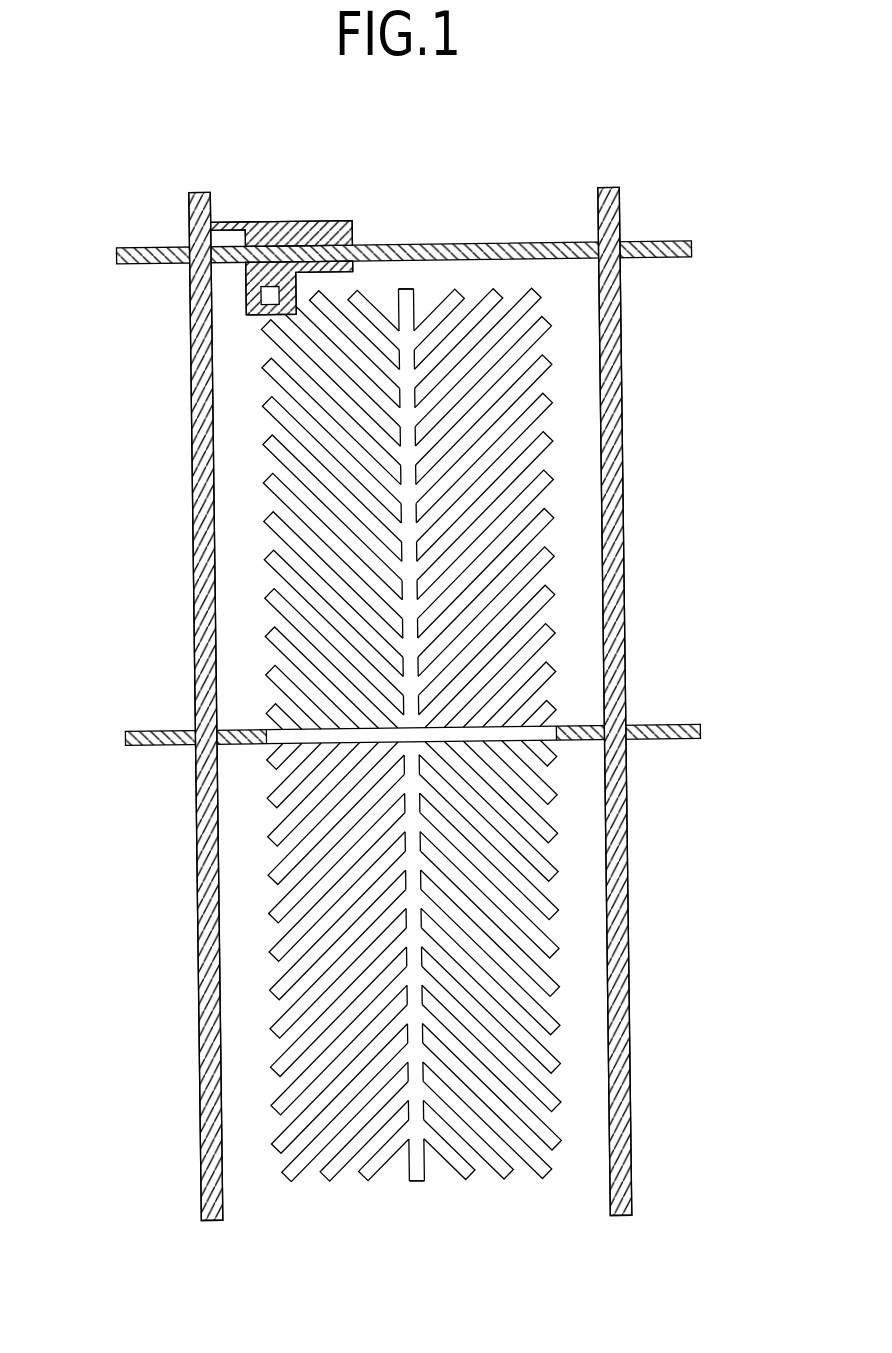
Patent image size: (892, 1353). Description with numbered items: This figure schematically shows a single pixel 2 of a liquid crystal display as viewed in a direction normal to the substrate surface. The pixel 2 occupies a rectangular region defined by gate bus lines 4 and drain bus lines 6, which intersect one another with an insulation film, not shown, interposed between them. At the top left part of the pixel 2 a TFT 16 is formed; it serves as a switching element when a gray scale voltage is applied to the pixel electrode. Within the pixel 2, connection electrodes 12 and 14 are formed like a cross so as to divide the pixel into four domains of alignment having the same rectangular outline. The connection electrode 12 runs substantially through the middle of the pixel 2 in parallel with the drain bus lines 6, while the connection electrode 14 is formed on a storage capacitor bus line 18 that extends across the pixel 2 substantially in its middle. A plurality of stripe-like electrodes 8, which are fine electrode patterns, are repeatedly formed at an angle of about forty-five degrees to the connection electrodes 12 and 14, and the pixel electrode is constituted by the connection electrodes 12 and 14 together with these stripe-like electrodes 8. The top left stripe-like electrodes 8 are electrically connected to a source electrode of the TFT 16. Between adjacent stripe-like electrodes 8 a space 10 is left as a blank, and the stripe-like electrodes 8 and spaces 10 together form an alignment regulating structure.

The pixel 2 is at (138, 449).
The gate bus line 4 is at (672, 241).
The drain bus line 6 is at (223, 1207).
The stripe-like electrode 8 is at (478, 760).
The space 10 is at (553, 993).
The connection electrode 12 is at (414, 961).
The connection electrode 14 is at (258, 748).
The TFT 16 is at (354, 222).
The storage capacitor bus line 18 is at (698, 732).